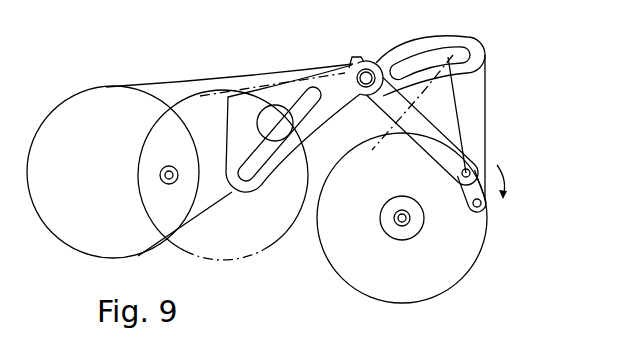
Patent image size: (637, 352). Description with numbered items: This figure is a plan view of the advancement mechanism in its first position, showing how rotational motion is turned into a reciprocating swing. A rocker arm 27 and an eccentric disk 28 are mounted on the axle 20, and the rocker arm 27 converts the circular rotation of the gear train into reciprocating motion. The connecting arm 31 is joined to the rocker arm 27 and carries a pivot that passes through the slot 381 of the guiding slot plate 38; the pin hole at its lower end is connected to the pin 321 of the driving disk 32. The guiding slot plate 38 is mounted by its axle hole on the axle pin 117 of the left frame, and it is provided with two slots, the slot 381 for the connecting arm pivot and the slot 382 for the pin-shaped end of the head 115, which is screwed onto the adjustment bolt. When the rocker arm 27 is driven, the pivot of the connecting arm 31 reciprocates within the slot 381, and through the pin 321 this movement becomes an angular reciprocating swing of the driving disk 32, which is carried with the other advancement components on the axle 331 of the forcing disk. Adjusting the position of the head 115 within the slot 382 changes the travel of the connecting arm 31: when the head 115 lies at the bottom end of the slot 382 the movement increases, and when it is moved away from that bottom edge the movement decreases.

The axle 20 is at (164, 184).
The rocker arm 27 is at (209, 78).
The eccentric disk 28 is at (152, 100).
The connecting arm 31 is at (297, 220).
The driving disk 32 is at (462, 278).
The guiding slot plate 38 is at (354, 60).
The head 115 is at (265, 121).
The axle pin 117 is at (367, 70).
The pin 321 is at (469, 171).
The axle 331 is at (397, 221).
The slot 381 is at (421, 56).
The slot 382 is at (247, 155).